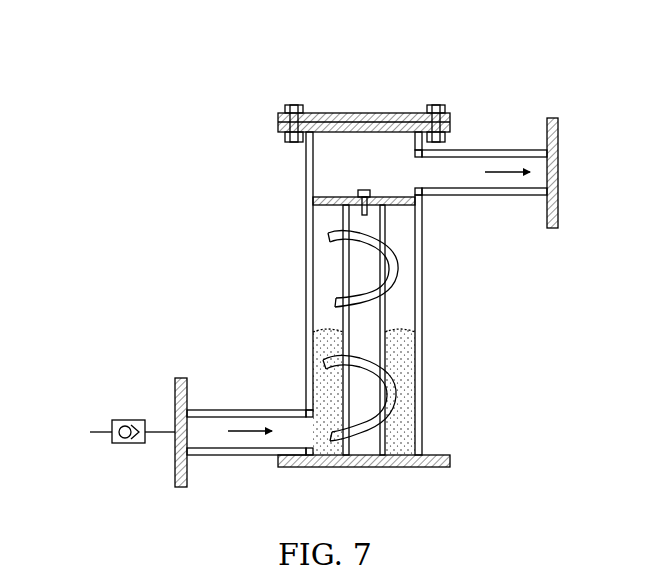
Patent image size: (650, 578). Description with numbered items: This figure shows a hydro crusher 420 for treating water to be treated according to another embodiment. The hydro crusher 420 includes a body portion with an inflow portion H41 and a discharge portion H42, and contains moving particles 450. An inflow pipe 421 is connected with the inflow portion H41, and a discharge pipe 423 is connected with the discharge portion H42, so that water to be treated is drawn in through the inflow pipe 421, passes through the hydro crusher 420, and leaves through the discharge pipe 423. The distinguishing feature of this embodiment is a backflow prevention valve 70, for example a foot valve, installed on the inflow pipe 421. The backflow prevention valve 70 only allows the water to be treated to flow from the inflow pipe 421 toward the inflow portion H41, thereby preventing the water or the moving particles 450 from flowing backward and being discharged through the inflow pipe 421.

The hydro crusher 420 is at (372, 57).
The inflow pipe 421 is at (218, 410).
The discharge pipe 423 is at (494, 150).
The inflow portion H41 is at (305, 432).
The discharge portion H42 is at (419, 168).
The backflow prevention valve 70 is at (125, 420).
The moving particles 450 is at (412, 393).